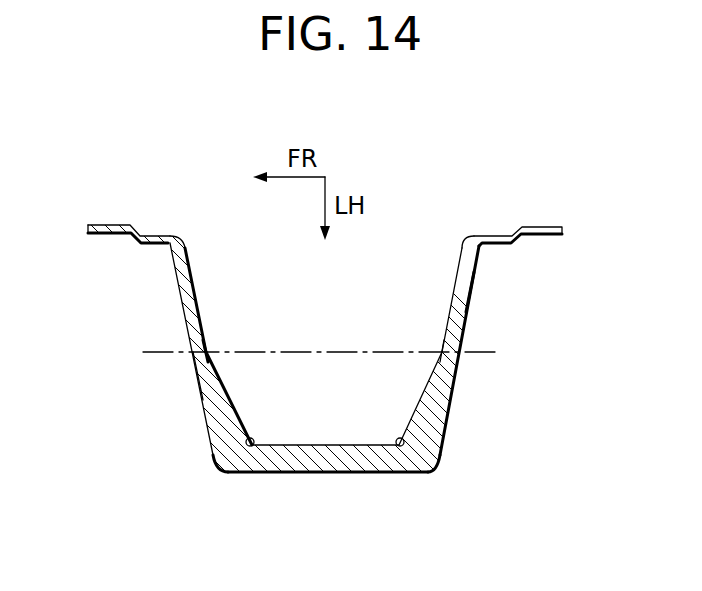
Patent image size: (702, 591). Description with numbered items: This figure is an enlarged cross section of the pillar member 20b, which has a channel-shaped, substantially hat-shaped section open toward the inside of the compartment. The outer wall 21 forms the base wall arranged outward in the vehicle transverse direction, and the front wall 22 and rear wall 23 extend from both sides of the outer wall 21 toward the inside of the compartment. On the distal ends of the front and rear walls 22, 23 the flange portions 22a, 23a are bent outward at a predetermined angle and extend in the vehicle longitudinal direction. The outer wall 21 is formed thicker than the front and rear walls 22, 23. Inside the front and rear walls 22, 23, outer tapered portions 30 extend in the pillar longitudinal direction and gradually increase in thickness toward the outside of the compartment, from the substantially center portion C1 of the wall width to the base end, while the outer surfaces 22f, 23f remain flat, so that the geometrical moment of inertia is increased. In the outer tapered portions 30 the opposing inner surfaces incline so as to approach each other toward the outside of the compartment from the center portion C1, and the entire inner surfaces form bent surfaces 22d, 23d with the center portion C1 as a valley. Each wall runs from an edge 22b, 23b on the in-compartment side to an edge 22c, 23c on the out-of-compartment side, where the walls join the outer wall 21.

The panel (cross-section member) 20b is at (186, 459).
The outer wall 21 is at (337, 473).
The front wall 22 is at (192, 324).
The flange portion 22a is at (114, 225).
The edge 22b is at (177, 237).
The edge 22c is at (243, 468).
The bent surface 22d is at (211, 343).
The outer surface 22f is at (198, 373).
The rear wall 23 is at (463, 322).
The flange portion 23a is at (534, 228).
The edge 23b is at (468, 238).
The edge 23c is at (407, 471).
The bent surface 23d is at (437, 343).
The outer surface 23f is at (471, 280).
The outer tapered portion 30 is at (203, 408).
The substantially center portion C1 is at (278, 352).